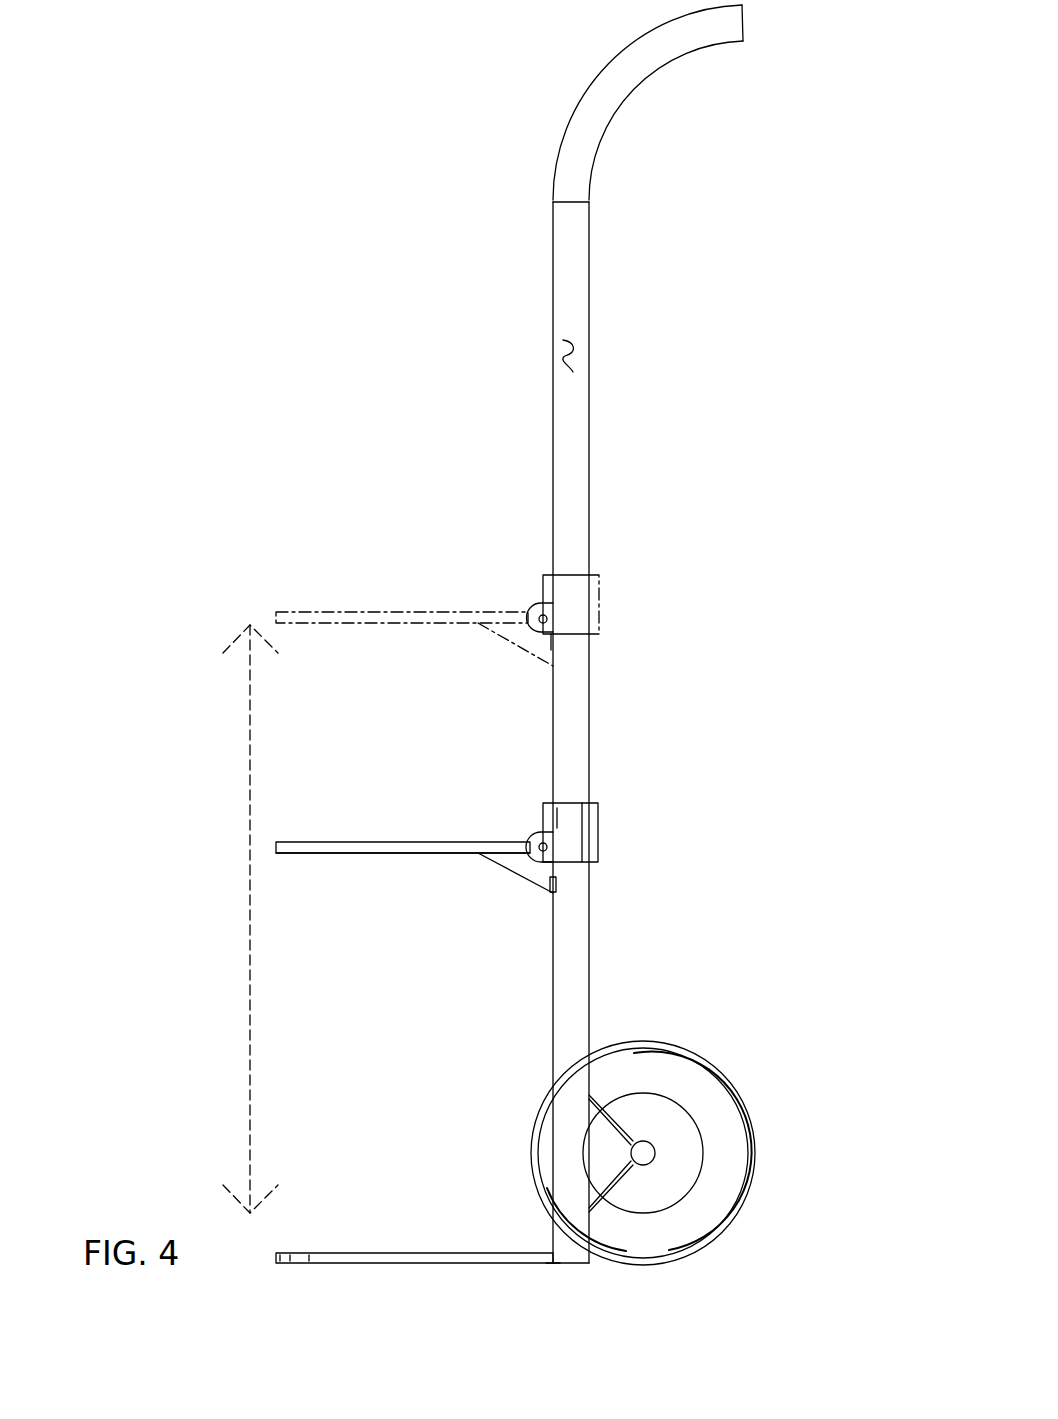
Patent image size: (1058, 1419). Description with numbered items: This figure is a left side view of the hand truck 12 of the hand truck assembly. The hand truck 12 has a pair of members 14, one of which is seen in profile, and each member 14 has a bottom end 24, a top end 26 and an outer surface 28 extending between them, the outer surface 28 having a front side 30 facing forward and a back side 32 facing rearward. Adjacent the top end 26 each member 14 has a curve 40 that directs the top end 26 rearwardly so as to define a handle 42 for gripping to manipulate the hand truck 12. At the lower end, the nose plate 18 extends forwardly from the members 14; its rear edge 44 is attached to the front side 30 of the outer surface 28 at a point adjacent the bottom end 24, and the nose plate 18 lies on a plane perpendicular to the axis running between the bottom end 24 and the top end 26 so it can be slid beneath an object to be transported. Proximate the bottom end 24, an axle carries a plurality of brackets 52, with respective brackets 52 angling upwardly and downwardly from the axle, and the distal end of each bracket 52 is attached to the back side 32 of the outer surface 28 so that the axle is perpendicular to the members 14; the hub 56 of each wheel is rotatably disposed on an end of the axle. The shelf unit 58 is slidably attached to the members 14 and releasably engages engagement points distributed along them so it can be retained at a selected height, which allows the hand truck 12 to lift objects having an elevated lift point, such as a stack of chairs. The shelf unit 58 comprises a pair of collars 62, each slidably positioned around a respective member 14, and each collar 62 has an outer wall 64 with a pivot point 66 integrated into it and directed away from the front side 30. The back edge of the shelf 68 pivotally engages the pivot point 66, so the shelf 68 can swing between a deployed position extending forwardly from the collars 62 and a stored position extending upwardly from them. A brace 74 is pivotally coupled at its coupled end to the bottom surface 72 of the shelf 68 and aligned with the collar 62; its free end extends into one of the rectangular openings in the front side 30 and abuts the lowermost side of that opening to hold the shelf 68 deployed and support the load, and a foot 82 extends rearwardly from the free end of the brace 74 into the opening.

The hand truck 12 is at (604, 313).
The member 14 is at (590, 411).
The nose plate 18 is at (270, 1268).
The bottom end 24 is at (575, 1265).
The top end 26 is at (746, 20).
The outer surface 28 is at (565, 349).
The front side 30 is at (553, 440).
The back side 32 is at (589, 700).
The curve 40 is at (585, 97).
The handle 42 is at (637, 100).
The rear edge 44 is at (556, 1262).
The bracket 52 is at (614, 1117).
The hub 56 is at (655, 1152).
The shelf unit 58 is at (530, 812).
The collar 62 is at (598, 815).
The outer wall 64 is at (589, 840).
The pivot point 66 is at (537, 862).
The shelf 68 is at (344, 842).
The bottom surface 72 is at (388, 853).
The brace 74 is at (508, 868).
The foot 82 is at (557, 885).